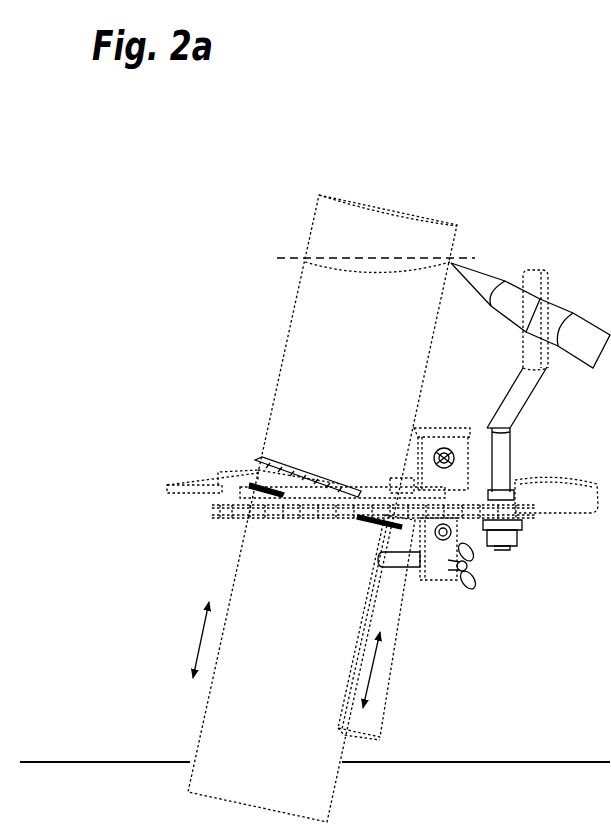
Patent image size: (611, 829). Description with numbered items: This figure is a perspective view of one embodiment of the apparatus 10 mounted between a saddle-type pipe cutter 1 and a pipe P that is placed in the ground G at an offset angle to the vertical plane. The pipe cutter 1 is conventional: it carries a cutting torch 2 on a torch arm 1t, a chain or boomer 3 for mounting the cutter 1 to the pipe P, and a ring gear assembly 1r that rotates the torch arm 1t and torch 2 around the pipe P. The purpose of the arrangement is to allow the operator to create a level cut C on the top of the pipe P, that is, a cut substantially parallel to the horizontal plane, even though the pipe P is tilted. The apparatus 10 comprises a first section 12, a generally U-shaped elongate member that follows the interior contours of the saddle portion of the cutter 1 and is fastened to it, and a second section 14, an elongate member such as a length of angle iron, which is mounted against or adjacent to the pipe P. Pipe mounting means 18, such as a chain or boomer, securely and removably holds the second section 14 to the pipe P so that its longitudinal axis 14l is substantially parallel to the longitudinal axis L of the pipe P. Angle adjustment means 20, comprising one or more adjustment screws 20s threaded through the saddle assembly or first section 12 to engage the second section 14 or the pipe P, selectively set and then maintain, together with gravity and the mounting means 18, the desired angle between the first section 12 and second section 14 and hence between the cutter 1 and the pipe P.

The saddle-type pipe cutter 1 is at (549, 537).
The ring gear assembly 1r is at (208, 468).
The torch arm 1t is at (493, 392).
The cutting torch 2 is at (561, 365).
The chain or boomer 3 is at (251, 456).
The apparatus 10 is at (442, 607).
The first section 12 is at (437, 427).
The second section 14 is at (397, 690).
The longitudinal axis of second section 14l is at (383, 656).
The pipe mounting means 18 is at (247, 487).
The angle adjustment means 20 is at (516, 575).
The adjustment screw 20s is at (480, 573).
The level cut C is at (270, 238).
The longitudinal axis of the pipe L is at (199, 642).
The pipe P is at (293, 676).
The ground G is at (487, 762).